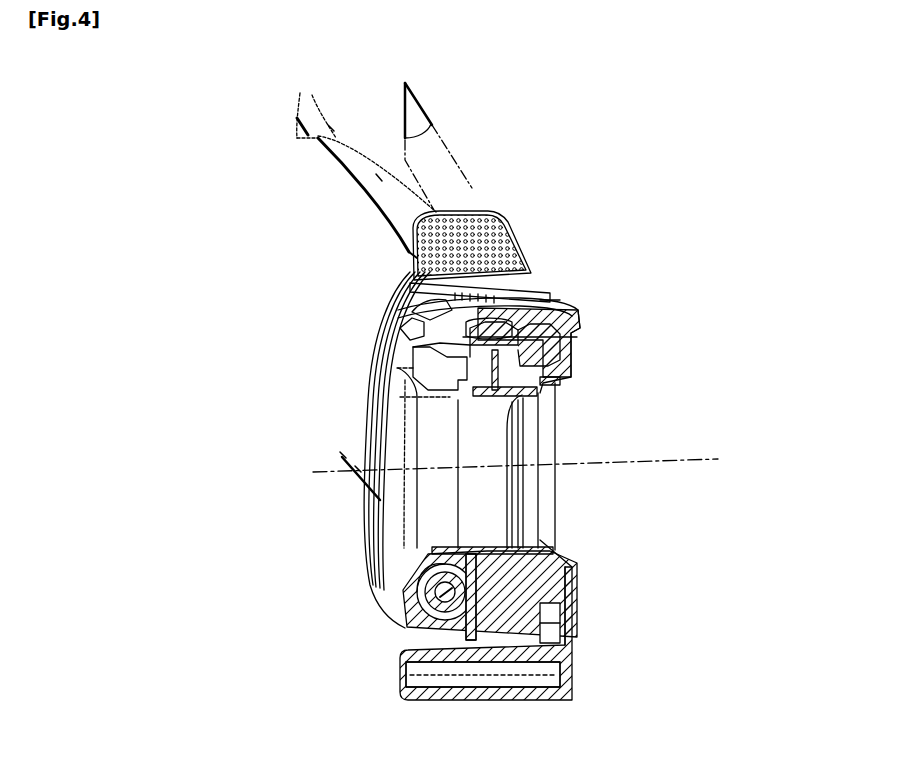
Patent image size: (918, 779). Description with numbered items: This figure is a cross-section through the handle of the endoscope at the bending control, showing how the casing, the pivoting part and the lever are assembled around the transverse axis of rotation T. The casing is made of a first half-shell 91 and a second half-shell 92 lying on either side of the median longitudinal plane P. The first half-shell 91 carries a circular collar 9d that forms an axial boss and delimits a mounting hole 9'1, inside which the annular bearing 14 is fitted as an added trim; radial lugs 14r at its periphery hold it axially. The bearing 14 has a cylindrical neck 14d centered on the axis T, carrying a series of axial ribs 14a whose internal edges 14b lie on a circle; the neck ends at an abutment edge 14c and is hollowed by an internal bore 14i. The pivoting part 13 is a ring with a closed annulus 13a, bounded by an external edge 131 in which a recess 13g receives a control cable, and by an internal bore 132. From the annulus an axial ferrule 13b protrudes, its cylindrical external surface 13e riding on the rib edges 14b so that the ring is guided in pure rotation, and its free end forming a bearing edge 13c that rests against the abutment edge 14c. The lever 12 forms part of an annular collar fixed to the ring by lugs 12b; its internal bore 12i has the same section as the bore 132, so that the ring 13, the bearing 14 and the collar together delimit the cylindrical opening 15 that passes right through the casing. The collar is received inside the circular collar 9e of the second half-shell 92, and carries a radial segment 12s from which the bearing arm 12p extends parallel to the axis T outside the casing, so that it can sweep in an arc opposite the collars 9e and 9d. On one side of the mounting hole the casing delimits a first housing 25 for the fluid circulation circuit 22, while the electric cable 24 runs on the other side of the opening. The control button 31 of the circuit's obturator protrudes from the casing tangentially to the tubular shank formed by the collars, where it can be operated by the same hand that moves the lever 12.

The control button 31 is at (473, 220).
The annulus 13a is at (500, 272).
The recess 13g is at (503, 332).
The electric cable 24 is at (417, 257).
The first half-shell 91 is at (412, 276).
The radial lugs 14r is at (427, 313).
The mounting hole 9'1 is at (384, 324).
The axial ribs 14a is at (480, 372).
The cylindrical neck 14d is at (433, 395).
The axial internal edge 14b is at (467, 427).
The axial ferrule 13b is at (500, 400).
The second half-shell 92 is at (558, 300).
The circular collar 9e is at (588, 307).
The external edge 131 is at (545, 350).
The cylindrical external surface 13e is at (507, 383).
The pivoting part 13 is at (507, 431).
The internal bore 132 is at (545, 465).
The transverse axis of rotation T is at (699, 460).
The internal bore 14i is at (437, 503).
The annular bearing 14 is at (410, 538).
The bearing edge 13c is at (450, 528).
The cylindrical opening 15 is at (552, 500).
The internal bore 12i is at (540, 532).
The lugs 12b is at (520, 567).
The abutment edge 14c is at (432, 560).
The fluid circulation circuit 22 is at (430, 612).
The circular collar 9d is at (403, 630).
The first housing 25 is at (467, 615).
The bearing arm 12p is at (490, 677).
The radial segment 12s is at (567, 632).
The lever 12 is at (574, 696).
The median longitudinal plane P is at (412, 121).